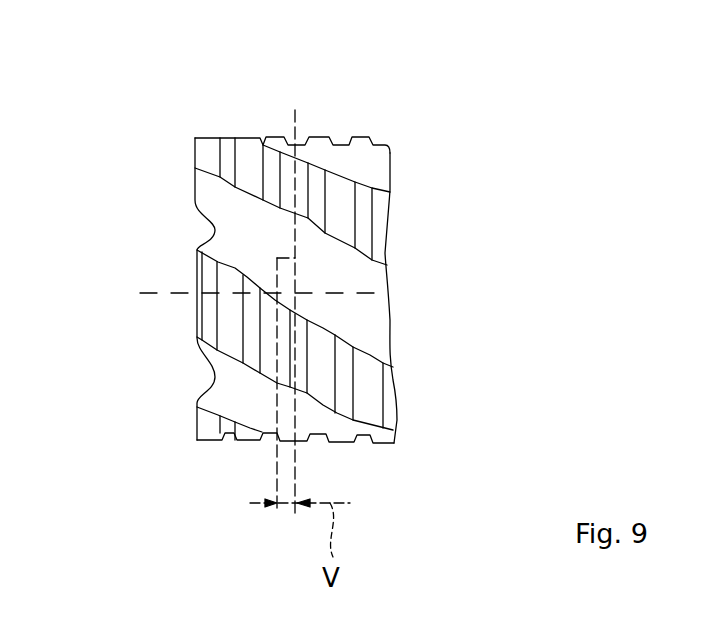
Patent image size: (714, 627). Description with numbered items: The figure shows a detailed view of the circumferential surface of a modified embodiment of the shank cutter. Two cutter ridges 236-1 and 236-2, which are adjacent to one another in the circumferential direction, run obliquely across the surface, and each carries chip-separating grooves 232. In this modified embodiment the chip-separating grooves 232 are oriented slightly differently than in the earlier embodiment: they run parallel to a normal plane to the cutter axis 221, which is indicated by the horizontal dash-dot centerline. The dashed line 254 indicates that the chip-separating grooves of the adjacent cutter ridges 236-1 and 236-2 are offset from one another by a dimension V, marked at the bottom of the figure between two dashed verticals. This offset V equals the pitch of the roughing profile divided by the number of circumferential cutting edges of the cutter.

The cutter ridge 236-1 is at (227, 160).
The cutter ridge 236-2 is at (288, 314).
The chip-separating grooves 232 is at (318, 338).
The dashed line 254 is at (295, 138).
The cutter axis 221 is at (153, 297).